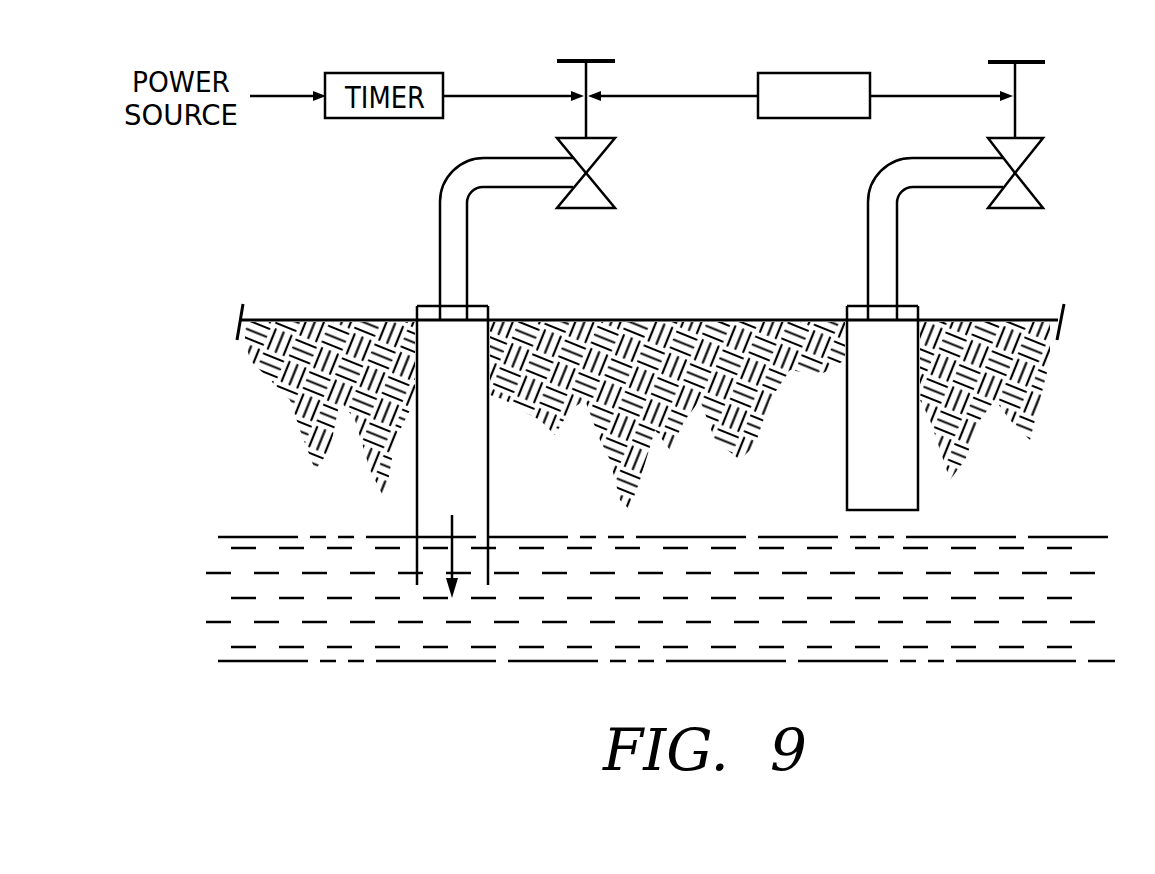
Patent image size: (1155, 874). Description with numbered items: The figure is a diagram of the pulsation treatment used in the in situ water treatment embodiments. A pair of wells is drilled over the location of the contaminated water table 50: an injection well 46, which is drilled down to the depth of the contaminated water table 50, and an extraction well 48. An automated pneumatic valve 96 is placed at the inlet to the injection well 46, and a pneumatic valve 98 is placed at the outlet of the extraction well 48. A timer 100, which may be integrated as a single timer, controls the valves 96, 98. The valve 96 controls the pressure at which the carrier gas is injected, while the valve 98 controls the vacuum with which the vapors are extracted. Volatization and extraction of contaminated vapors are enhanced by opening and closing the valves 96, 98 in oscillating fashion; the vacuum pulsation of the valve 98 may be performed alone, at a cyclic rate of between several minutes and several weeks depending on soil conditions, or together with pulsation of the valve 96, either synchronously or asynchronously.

The injection well 46 is at (490, 478).
The extraction well 48 is at (920, 491).
The contaminated water table 50 is at (1048, 556).
The automated pneumatic valve 96 is at (607, 198).
The pneumatic valve 98 is at (1038, 198).
The timer 100 is at (834, 73).